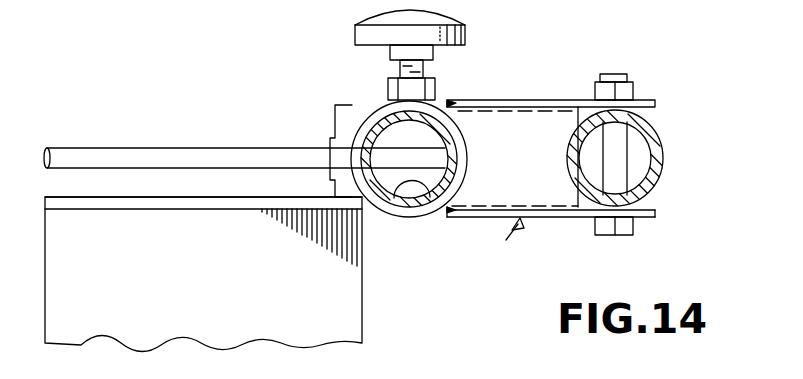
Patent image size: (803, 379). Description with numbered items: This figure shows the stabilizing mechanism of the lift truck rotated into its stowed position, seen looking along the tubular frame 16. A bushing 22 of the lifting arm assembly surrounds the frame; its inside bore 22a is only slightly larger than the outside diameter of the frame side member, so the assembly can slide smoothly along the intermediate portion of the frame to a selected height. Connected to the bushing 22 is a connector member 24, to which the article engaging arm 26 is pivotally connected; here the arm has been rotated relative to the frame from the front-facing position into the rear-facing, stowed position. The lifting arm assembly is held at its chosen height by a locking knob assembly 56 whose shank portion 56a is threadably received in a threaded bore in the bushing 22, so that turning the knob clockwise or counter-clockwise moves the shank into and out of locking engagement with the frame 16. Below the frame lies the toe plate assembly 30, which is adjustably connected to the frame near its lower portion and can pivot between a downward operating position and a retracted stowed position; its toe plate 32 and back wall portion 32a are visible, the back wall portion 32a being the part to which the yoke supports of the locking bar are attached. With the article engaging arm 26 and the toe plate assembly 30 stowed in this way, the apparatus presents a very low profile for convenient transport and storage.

The tubular frame 16 is at (455, 152).
The bushing 22 is at (464, 129).
The inside bore 22a is at (403, 205).
The connector member 24 is at (538, 104).
The article engaging arm 26 is at (665, 155).
The toe plate assembly 30 is at (338, 306).
The toe plate 32 is at (273, 252).
The back wall portion 32a is at (170, 212).
The locking knob assembly 56 is at (360, 35).
The shank portion 56a is at (400, 66).